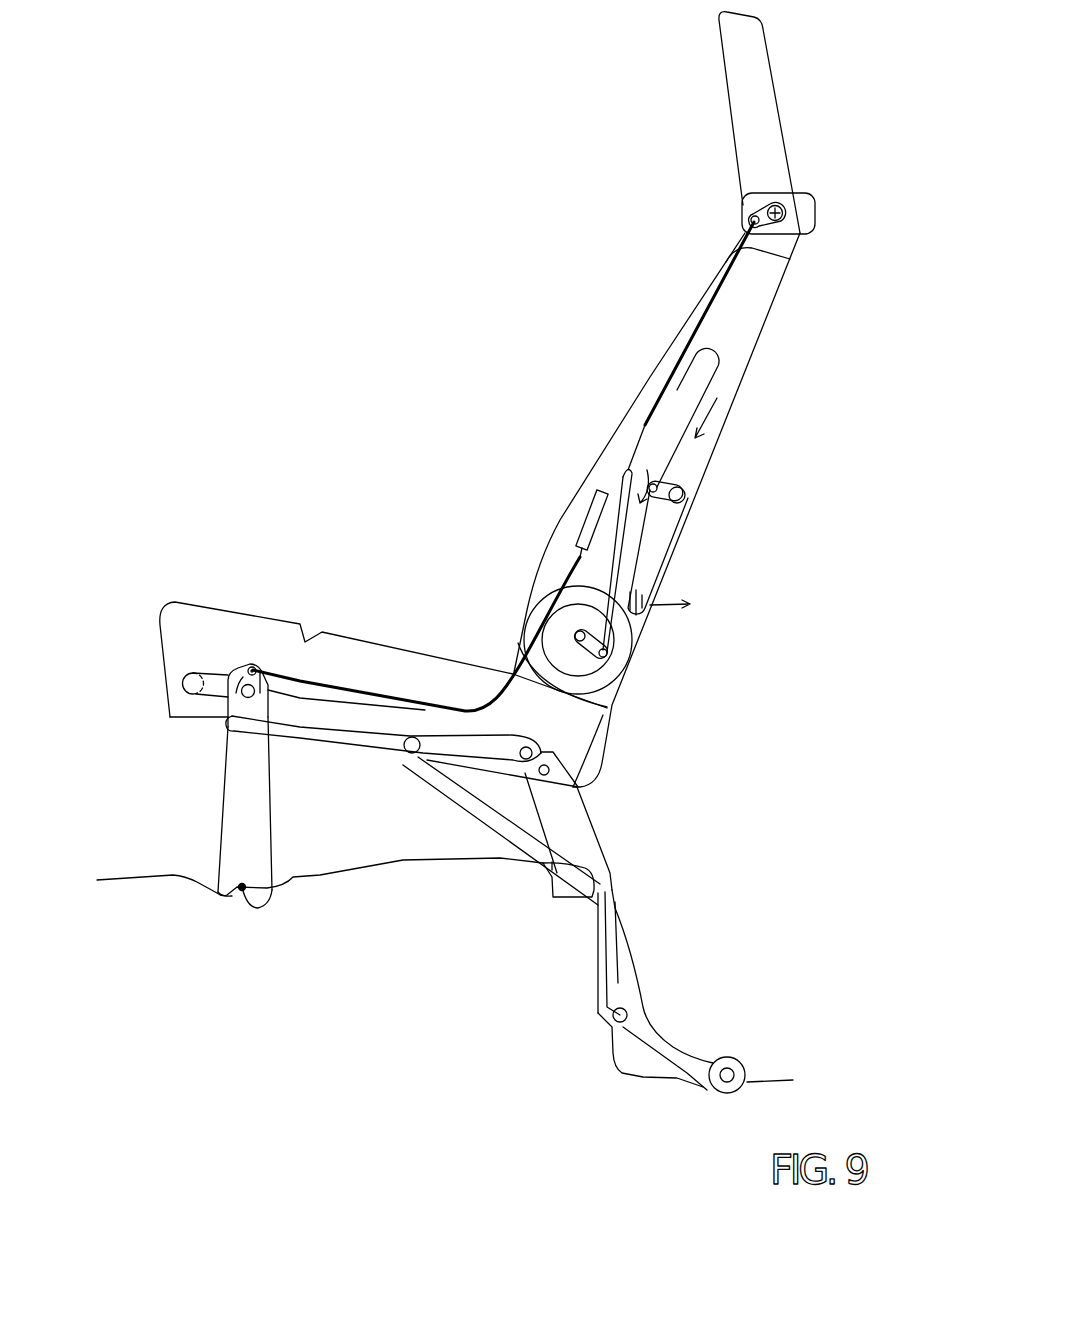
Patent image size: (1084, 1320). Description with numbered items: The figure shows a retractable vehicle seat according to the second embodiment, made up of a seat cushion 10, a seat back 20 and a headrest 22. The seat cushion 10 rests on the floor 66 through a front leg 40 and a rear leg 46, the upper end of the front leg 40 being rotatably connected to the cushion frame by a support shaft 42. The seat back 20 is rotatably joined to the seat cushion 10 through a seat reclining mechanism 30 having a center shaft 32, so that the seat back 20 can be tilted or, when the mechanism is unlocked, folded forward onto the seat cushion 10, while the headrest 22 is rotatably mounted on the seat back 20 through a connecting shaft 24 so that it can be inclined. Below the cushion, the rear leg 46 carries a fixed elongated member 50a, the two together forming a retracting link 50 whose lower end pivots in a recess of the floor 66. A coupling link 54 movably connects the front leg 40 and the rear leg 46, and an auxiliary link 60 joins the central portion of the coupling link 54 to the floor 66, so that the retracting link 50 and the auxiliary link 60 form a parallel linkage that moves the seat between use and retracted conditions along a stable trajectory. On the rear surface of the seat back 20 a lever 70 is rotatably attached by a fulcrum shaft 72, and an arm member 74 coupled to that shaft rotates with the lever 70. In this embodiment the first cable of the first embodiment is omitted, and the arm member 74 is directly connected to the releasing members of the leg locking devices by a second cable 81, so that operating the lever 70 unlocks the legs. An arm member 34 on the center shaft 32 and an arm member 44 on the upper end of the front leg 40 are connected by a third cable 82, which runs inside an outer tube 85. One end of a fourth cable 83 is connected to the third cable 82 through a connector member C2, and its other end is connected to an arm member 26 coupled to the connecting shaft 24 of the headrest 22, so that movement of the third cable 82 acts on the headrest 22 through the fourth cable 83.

The seat cushion 10 is at (270, 612).
The seat back 20 is at (715, 455).
The headrest 22 is at (785, 110).
The connecting shaft 24 is at (784, 213).
The arm member 26 is at (752, 208).
The seat reclining mechanism 30 is at (618, 638).
The center shaft 32 is at (577, 635).
The arm member 34 is at (607, 657).
The front leg 40 is at (242, 838).
The support shaft 42 is at (246, 697).
The arm member 44 is at (250, 670).
The rear leg 46 is at (583, 845).
The retracting link 50 is at (667, 977).
The elongated member 50a is at (625, 932).
The coupling link 54 is at (313, 730).
The auxiliary link 60 is at (472, 788).
The floor 66 is at (118, 895).
The lever 70 is at (668, 552).
The fulcrum shaft 72 is at (685, 497).
The arm member 74 is at (600, 510).
The second cable 81 is at (715, 378).
The third cable 82 is at (416, 634).
The fourth cable 83 is at (672, 355).
The outer tube 85 is at (378, 693).
The connector member C2 is at (598, 503).